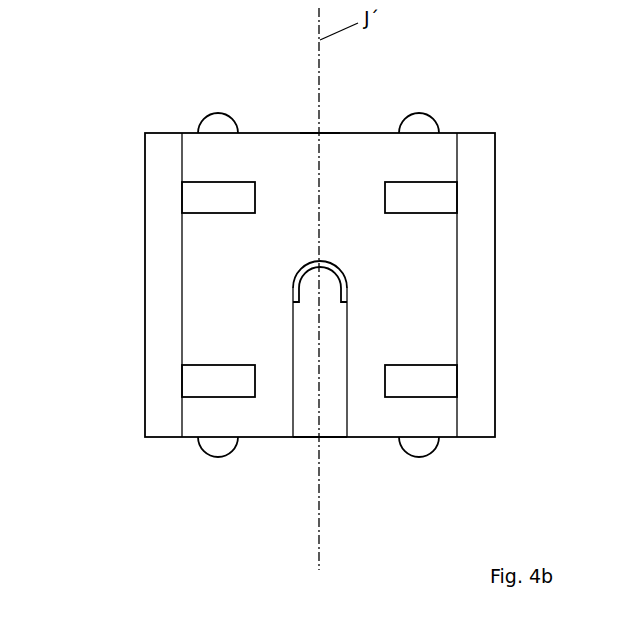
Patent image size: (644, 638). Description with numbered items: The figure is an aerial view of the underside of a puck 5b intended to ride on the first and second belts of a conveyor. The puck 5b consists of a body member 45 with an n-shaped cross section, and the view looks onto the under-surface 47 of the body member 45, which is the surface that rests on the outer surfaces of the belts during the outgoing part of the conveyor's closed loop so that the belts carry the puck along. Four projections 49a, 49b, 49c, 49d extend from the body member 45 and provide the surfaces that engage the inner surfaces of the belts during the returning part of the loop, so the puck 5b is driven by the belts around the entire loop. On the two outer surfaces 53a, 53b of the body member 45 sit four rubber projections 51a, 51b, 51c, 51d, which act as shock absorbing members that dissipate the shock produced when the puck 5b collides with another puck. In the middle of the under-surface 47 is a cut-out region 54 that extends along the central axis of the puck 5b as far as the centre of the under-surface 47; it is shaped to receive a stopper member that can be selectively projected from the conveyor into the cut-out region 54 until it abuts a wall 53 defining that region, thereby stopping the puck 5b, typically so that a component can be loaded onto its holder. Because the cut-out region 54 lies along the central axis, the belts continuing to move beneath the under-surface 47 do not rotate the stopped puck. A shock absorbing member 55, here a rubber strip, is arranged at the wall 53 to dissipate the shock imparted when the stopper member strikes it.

The puck 5b is at (510, 146).
The body member 45 is at (480, 339).
The under-surface 47 is at (195, 337).
The projection 49a is at (195, 381).
The projection 49b is at (440, 383).
The projection 49c is at (440, 197).
The projection 49d is at (195, 200).
The rubber projection 51a is at (218, 459).
The rubber projection 51b is at (411, 460).
The rubber projection 51c is at (428, 113).
The rubber projection 51d is at (220, 113).
The wall 53 is at (335, 264).
The outer surface 53a is at (283, 438).
The outer surface 53b is at (325, 133).
The cut-out region 54 is at (330, 323).
The shock absorbing member 55 is at (295, 274).